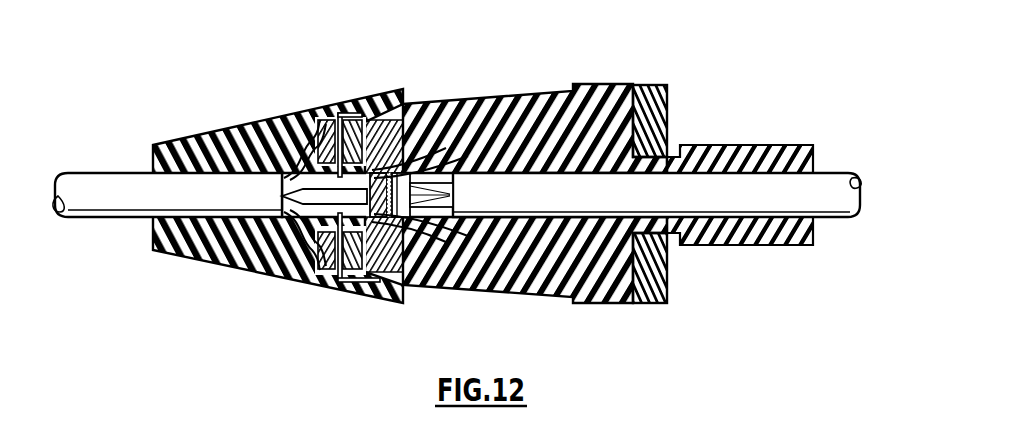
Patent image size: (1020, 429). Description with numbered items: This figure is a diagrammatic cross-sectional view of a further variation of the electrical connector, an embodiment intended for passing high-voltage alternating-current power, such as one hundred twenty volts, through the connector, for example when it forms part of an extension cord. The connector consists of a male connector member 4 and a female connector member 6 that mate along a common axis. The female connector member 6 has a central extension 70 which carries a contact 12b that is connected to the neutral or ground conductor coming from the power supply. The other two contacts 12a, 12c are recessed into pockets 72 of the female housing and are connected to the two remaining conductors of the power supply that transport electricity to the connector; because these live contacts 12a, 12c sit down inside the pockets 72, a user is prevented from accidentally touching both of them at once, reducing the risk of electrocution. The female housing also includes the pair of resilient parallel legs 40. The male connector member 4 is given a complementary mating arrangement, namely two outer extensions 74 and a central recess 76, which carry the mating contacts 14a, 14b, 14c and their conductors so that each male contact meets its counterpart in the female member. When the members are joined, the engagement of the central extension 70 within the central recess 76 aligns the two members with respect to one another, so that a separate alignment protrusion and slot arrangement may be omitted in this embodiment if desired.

The male connector member 4 is at (553, 82).
The female connector member 6 is at (212, 124).
The contact 12a is at (306, 116).
The contact 12b is at (407, 283).
The contact 12c is at (303, 275).
The mating contact 14a is at (358, 113).
The mating contact 14b is at (452, 195).
The mating contact 14c is at (373, 300).
The legs 40 is at (667, 134).
The central extension 70 is at (437, 158).
The pockets 72 is at (360, 94).
The outer extensions 74 is at (282, 195).
The central recess 76 is at (403, 147).